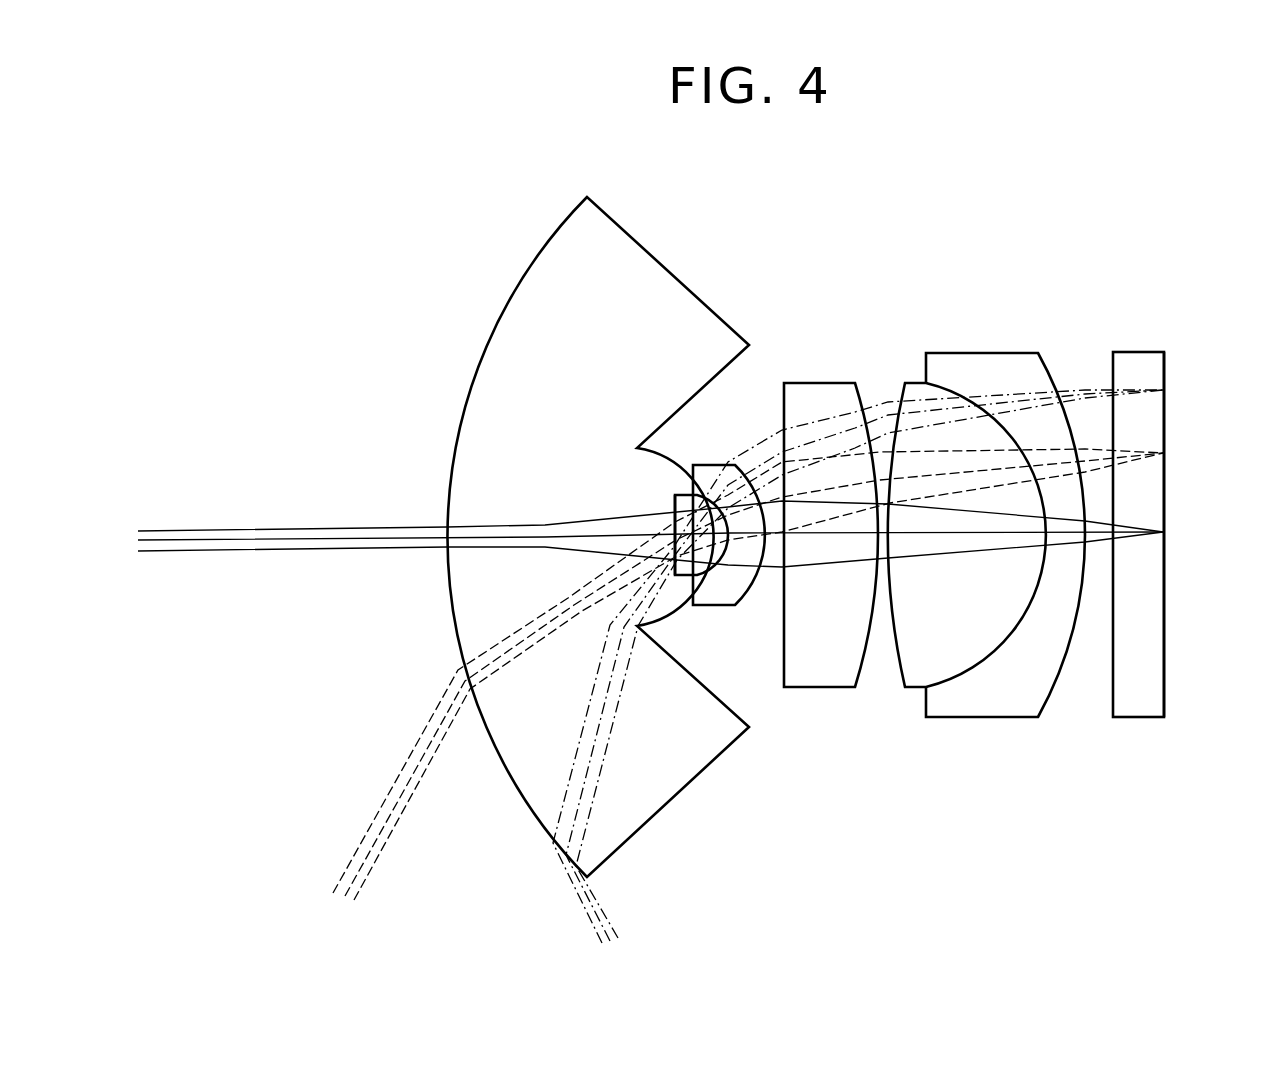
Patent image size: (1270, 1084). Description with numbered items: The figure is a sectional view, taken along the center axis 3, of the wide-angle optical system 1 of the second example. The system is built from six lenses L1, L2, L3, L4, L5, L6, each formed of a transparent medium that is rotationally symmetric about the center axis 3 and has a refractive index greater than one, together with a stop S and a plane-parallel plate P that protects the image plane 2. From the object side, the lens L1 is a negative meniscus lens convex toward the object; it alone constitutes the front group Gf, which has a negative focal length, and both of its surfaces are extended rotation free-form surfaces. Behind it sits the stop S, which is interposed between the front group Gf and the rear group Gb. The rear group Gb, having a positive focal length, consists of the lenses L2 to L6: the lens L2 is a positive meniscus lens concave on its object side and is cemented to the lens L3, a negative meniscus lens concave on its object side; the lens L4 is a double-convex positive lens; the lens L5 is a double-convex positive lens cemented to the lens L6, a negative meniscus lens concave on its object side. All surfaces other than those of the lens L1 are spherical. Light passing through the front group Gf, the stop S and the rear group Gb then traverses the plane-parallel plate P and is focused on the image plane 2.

The wide-angle optical system 1 is at (882, 235).
The image plane 2 is at (1166, 607).
The center axis 3 is at (322, 541).
The front group Gf is at (481, 262).
The rear group Gb is at (980, 317).
The lens L1 is at (650, 798).
The lens L2 is at (703, 575).
The lens L3 is at (732, 607).
The lens L4 is at (822, 676).
The lens L5 is at (912, 676).
The lens L6 is at (988, 708).
The stop S is at (673, 578).
The plane-parallel plate P is at (1148, 702).